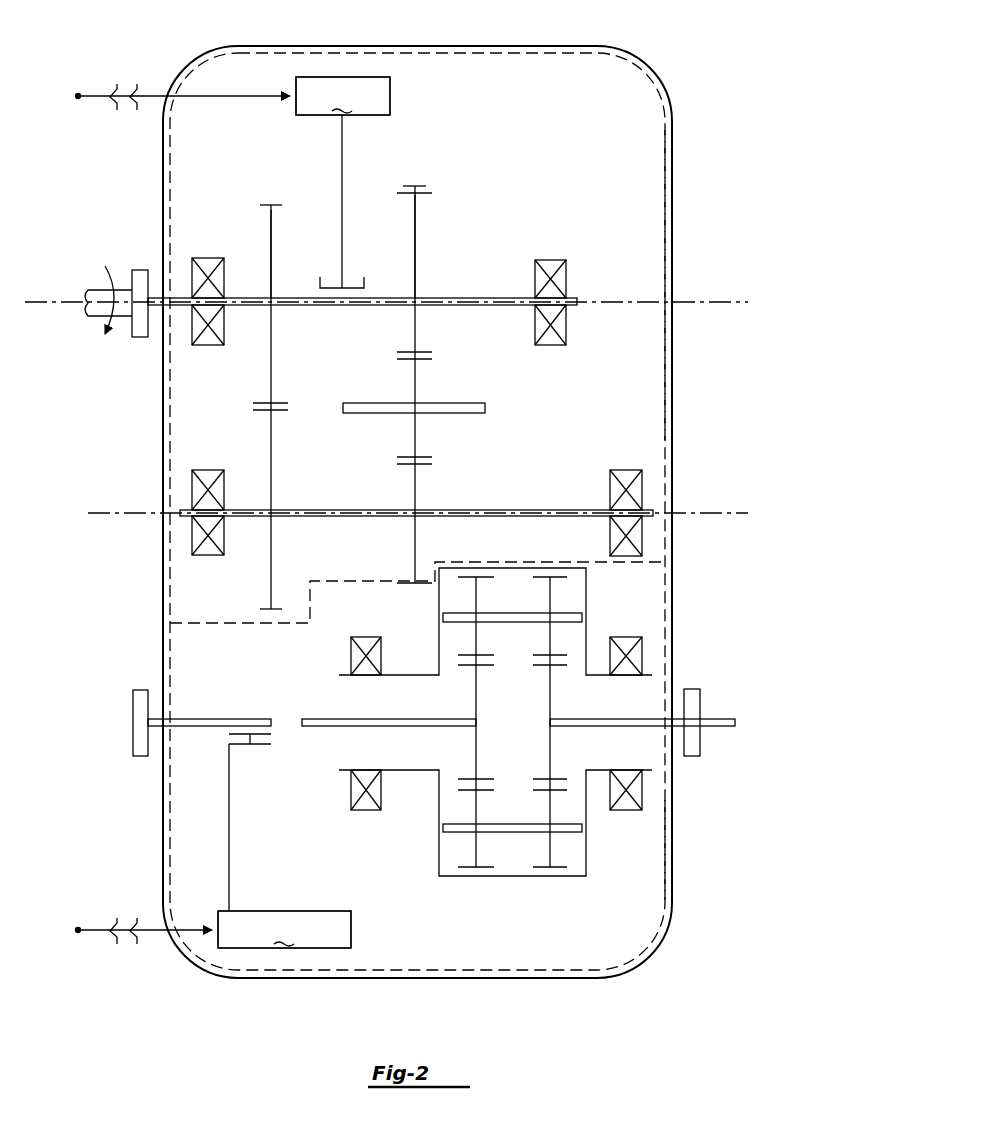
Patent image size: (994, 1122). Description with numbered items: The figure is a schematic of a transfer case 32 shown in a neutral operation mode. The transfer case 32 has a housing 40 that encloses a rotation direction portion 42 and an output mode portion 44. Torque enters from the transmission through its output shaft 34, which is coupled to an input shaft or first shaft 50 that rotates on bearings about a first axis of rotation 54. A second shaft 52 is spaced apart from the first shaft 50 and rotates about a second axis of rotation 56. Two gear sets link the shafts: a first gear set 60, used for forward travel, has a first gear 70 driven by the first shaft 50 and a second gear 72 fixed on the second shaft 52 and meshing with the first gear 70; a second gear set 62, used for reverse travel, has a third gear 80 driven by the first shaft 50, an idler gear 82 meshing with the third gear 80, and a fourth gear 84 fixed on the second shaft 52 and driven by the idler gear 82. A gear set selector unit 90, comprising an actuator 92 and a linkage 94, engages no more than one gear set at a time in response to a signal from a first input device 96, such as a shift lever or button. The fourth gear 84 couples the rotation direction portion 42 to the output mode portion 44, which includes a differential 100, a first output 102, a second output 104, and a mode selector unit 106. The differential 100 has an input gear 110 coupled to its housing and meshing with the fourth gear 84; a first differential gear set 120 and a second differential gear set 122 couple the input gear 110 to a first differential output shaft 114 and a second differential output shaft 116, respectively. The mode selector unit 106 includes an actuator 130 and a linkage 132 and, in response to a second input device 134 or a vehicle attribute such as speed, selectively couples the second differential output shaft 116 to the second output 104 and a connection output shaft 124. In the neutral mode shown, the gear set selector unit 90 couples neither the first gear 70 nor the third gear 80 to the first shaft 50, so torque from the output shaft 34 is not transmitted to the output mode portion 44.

The transfer case 32 is at (667, 55).
The output shaft 34 is at (93, 290).
The housing 40 is at (518, 50).
The rotation direction portion 42 is at (665, 199).
The output mode portion 44 is at (665, 868).
The first shaft 50 is at (247, 298).
The second shaft 52 is at (244, 508).
The first axis of rotation 54 is at (606, 298).
The second axis of rotation 56 is at (702, 511).
The first gear set 60 is at (270, 200).
The second gear set 62 is at (431, 182).
The first gear 70 is at (271, 228).
The second gear 72 is at (271, 436).
The third gear 80 is at (415, 215).
The idler gear 82 is at (415, 381).
The fourth gear 84 is at (415, 488).
The gear set selector unit 90 is at (367, 74).
The actuator 92 is at (343, 96).
The linkage 94 is at (342, 155).
The first input device 96 is at (78, 94).
The differential 100 is at (408, 836).
The first output 102 is at (700, 722).
The second output 104 is at (133, 724).
The mode selector unit 106 is at (430, 951).
The input gear 110 is at (566, 624).
The first differential output shaft 114 is at (590, 718).
The second differential output shaft 116 is at (317, 719).
The first differential gear set 120 is at (553, 880).
The second differential gear set 122 is at (476, 880).
The connection output shaft 124 is at (213, 719).
The actuator 130 is at (284, 929).
The linkage 132 is at (230, 828).
The second input device 134 is at (78, 928).